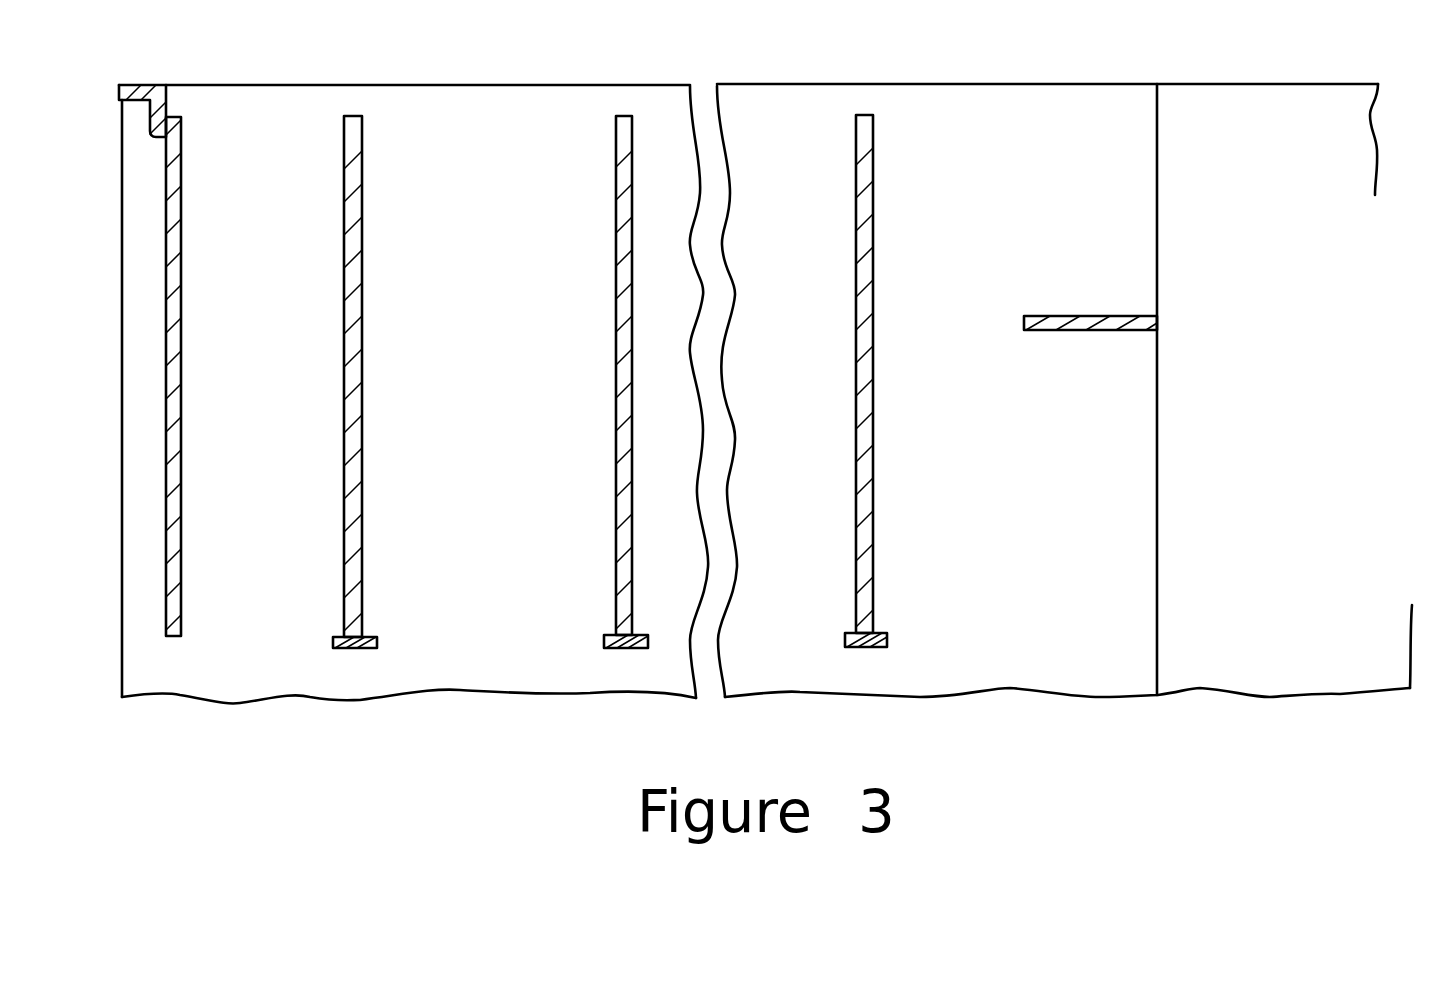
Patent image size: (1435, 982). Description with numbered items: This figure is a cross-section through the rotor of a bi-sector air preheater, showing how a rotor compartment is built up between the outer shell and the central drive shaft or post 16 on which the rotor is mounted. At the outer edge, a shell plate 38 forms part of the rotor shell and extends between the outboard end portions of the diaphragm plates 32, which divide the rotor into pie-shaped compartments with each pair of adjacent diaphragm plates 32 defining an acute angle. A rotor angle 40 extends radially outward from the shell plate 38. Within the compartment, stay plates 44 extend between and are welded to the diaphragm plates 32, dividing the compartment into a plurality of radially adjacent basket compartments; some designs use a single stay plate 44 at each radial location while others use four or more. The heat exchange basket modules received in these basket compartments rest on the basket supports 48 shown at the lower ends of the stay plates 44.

The drive shaft or post 16 is at (1347, 411).
The diaphragm plate 32 is at (476, 85).
The shell plate 38 is at (181, 247).
The rotor angle 40 is at (142, 90).
The stay plate 44 is at (616, 364).
The basket support 48 is at (356, 649).